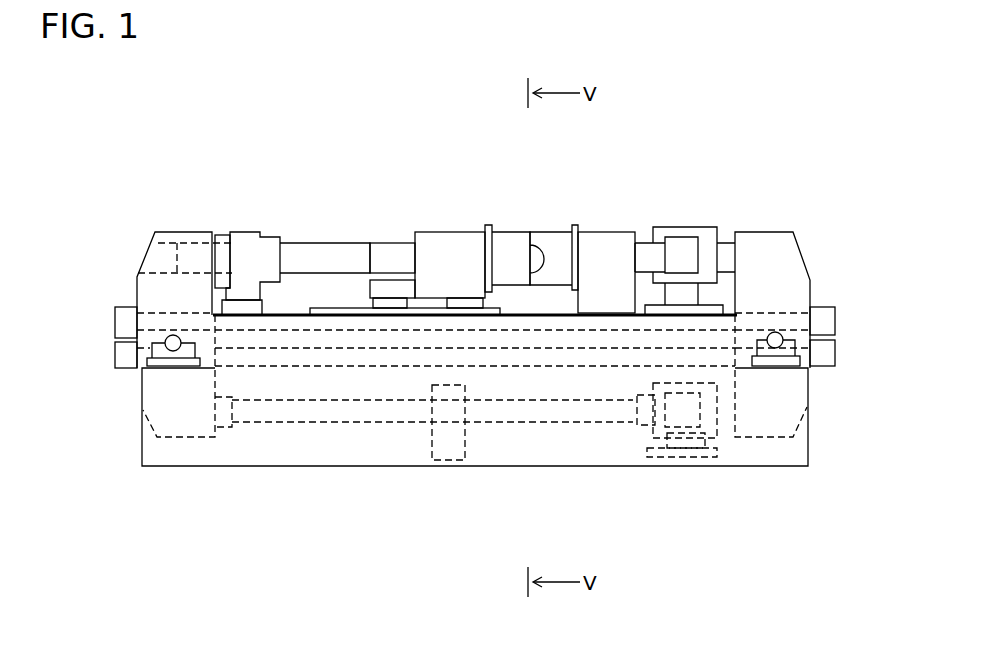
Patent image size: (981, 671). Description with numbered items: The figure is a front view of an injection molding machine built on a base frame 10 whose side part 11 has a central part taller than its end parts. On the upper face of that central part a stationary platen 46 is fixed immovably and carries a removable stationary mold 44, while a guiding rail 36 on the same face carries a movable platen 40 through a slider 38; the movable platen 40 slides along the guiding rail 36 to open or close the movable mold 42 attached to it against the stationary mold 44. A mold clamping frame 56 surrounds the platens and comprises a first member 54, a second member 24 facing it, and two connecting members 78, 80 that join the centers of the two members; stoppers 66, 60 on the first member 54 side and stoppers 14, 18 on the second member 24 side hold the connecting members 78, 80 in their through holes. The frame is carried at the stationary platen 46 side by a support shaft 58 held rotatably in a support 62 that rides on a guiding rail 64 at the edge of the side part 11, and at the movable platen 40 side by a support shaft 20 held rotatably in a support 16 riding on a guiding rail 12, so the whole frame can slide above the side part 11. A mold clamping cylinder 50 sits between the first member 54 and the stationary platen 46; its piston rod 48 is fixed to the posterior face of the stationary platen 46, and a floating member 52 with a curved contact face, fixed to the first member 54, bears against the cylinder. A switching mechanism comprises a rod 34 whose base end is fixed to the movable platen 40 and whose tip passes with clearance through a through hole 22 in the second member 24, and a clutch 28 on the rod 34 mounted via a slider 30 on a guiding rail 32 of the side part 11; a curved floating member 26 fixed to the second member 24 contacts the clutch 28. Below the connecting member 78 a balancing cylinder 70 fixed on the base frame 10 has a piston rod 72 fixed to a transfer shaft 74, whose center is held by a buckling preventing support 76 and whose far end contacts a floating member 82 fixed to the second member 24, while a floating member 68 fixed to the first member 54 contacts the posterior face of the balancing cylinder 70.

The base frame 10 is at (140, 447).
The side part 11 is at (142, 430).
The guiding rail 12 is at (142, 360).
The stopper 14 is at (115, 360).
The support 16 is at (152, 348).
The stopper 18 is at (115, 322).
The support shaft 20 is at (173, 335).
The through hole 22 is at (167, 270).
The second member 24 is at (173, 232).
The floating member 26 is at (223, 235).
The clutch 28 is at (247, 232).
The slider 30 is at (265, 307).
The guiding rail 32 is at (310, 308).
The rod 34 is at (345, 300).
The guiding rail 36 is at (370, 300).
The slider 38 is at (385, 243).
The movable platen 40 is at (450, 232).
The movable mold 42 is at (510, 232).
The stationary mold 44 is at (553, 232).
The stationary platen 46 is at (608, 232).
The piston rod 48 is at (643, 243).
The mold clamping cylinder 50 is at (685, 227).
The floating member 52 is at (727, 243).
The first member 54 is at (767, 232).
The mold clamping frame 56 is at (787, 231).
The support shaft 58 is at (778, 332).
The stopper 60 is at (823, 307).
The support 62 is at (798, 342).
The guiding rail 64 is at (796, 356).
The stopper 66 is at (825, 375).
The floating member 68 is at (722, 457).
The balancing cylinder 70 is at (705, 448).
The piston rod 72 is at (645, 425).
The transfer shaft 74 is at (540, 422).
The buckling preventing support 76 is at (465, 441).
The connecting member 78 is at (378, 368).
The connecting member 80 is at (308, 330).
The floating member 82 is at (232, 427).